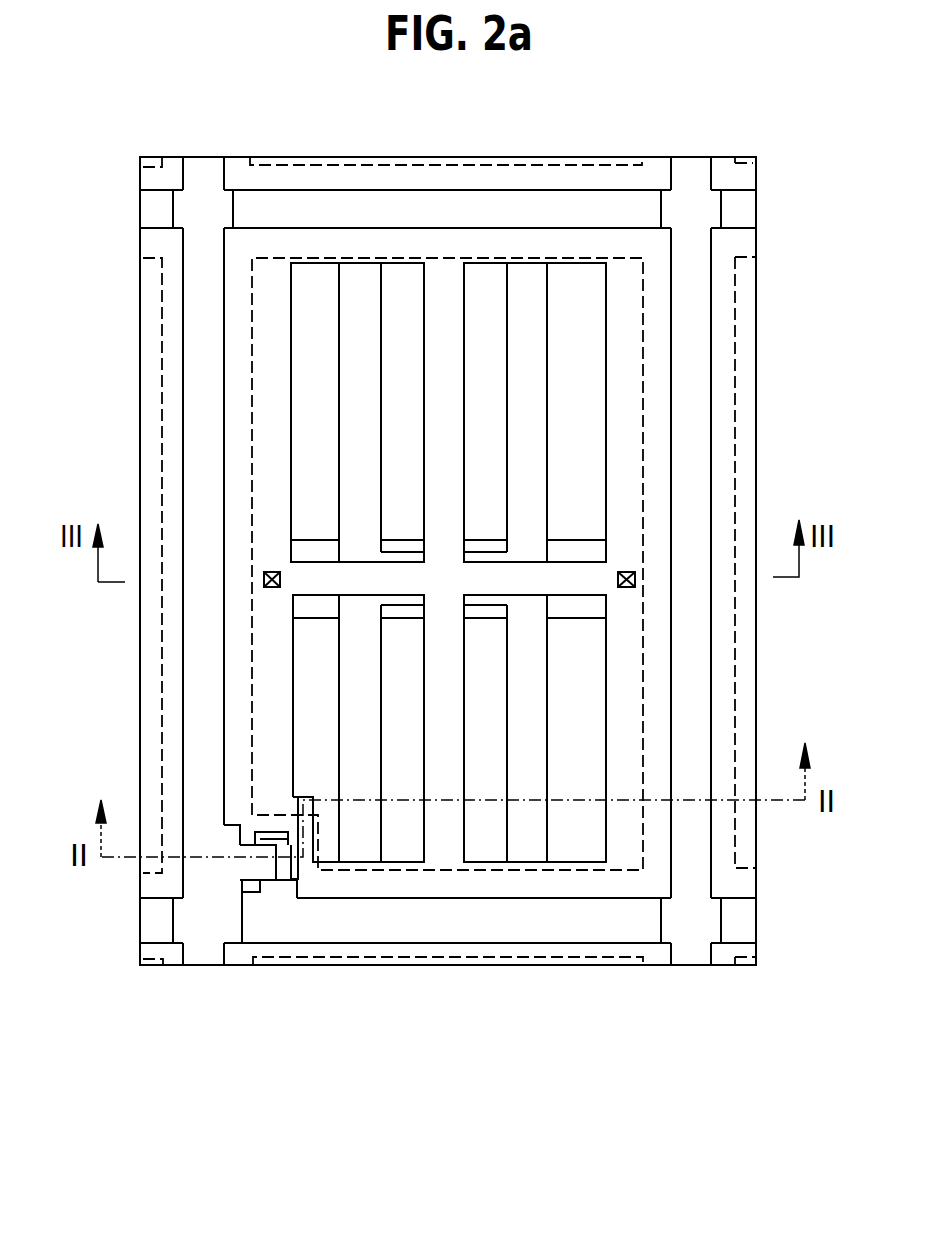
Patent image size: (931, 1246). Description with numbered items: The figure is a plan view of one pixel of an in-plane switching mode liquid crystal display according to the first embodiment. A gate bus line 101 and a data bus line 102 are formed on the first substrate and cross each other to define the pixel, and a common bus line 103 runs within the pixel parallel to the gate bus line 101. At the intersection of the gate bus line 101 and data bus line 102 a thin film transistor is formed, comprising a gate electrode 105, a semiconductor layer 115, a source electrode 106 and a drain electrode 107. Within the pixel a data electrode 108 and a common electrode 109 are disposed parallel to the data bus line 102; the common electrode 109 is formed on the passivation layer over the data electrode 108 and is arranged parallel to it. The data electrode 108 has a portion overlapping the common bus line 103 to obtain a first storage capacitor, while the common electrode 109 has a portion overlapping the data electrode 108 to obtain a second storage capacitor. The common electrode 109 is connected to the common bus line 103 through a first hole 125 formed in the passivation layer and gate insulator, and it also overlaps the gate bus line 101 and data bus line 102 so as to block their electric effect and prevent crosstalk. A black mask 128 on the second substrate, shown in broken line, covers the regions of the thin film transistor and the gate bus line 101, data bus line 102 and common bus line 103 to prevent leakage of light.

The gate bus line 101 is at (747, 918).
The data bus line 102 is at (693, 952).
The common bus line 103 is at (593, 605).
The gate electrode 105 is at (278, 889).
The source electrode 106 is at (247, 865).
The drain electrode 107 is at (296, 868).
The data electrode 108 is at (524, 848).
The common electrode 109 is at (437, 882).
The semiconductor layer 115 is at (280, 833).
The first hole 125 is at (264, 579).
The black mask 128 is at (735, 706).